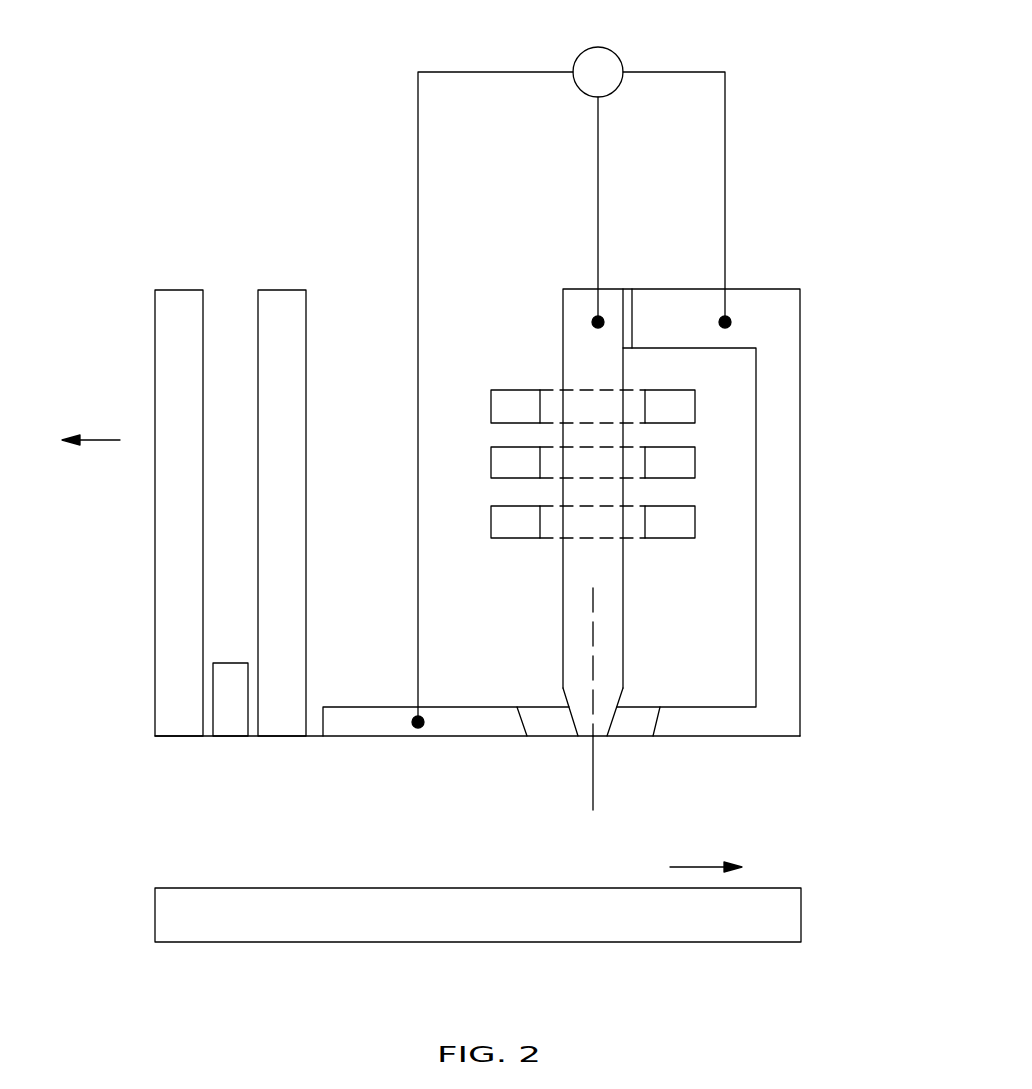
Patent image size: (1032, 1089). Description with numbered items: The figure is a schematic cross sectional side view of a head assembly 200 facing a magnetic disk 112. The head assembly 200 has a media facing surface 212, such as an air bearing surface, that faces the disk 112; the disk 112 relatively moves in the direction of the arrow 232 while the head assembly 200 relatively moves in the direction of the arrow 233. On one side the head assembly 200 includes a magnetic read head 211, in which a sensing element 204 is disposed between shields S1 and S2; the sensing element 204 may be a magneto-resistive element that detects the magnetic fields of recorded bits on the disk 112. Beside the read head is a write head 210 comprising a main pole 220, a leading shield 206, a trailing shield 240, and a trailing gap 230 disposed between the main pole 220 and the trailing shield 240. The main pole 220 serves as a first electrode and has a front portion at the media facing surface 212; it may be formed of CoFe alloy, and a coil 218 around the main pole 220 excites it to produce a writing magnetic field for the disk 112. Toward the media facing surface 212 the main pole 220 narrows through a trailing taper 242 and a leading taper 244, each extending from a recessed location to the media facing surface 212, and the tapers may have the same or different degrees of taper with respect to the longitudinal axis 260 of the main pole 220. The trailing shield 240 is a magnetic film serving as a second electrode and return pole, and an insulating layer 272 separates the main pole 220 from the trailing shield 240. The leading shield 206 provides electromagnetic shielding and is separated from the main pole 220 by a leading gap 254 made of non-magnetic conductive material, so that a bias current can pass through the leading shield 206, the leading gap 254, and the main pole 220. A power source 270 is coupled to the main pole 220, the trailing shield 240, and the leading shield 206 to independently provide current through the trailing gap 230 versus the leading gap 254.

The head assembly 200 is at (186, 120).
The magnetic read head 211 is at (310, 240).
The write head 210 is at (805, 240).
The shield S1 is at (175, 738).
The shield S2 is at (282, 738).
The sensing element 204 is at (228, 740).
The leading shield 206 is at (370, 738).
The trailing shield 240 is at (768, 722).
The insulating layer 272 is at (634, 318).
The main pole 220 is at (607, 570).
The coil 218 is at (503, 540).
The leading taper 244 is at (563, 694).
The trailing taper 242 is at (620, 690).
The leading gap 254 is at (555, 725).
The media facing surface 212 is at (678, 738).
The trailing gap 230 is at (623, 720).
The longitudinal axis 260 is at (593, 800).
The power source 270 is at (620, 58).
The arrow 233 is at (100, 440).
The arrow 232 is at (697, 867).
The magnetic disk 112 is at (803, 912).